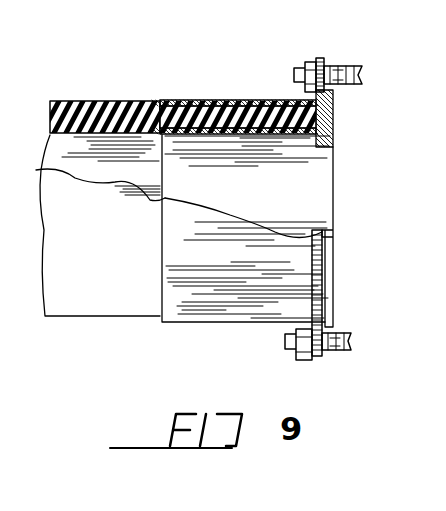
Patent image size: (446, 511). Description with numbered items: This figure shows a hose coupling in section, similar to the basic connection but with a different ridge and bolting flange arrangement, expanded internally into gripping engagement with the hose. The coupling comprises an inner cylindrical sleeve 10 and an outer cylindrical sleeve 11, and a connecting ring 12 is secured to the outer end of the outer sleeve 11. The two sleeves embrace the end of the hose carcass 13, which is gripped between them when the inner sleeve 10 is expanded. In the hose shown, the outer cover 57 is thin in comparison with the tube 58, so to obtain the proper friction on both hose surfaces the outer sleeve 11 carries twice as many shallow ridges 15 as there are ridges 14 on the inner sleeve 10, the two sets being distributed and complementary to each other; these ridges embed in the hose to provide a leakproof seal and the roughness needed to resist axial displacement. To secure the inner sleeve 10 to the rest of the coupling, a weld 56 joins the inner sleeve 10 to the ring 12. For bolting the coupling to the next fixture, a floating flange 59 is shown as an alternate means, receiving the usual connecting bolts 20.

The inner cylindrical sleeve 10 is at (230, 135).
The outer cylindrical sleeve 11 is at (206, 100).
The connecting ring 12 is at (335, 108).
The hose carcass 13 is at (110, 101).
The ridges of the inner sleeve 14 is at (262, 135).
The ridges of the outer sleeve 15 is at (257, 100).
The connecting bolts 20 is at (356, 68).
The weld 56 is at (336, 135).
The outer cover 57 is at (130, 101).
The tube 58 is at (145, 134).
The floating flange 59 is at (325, 59).